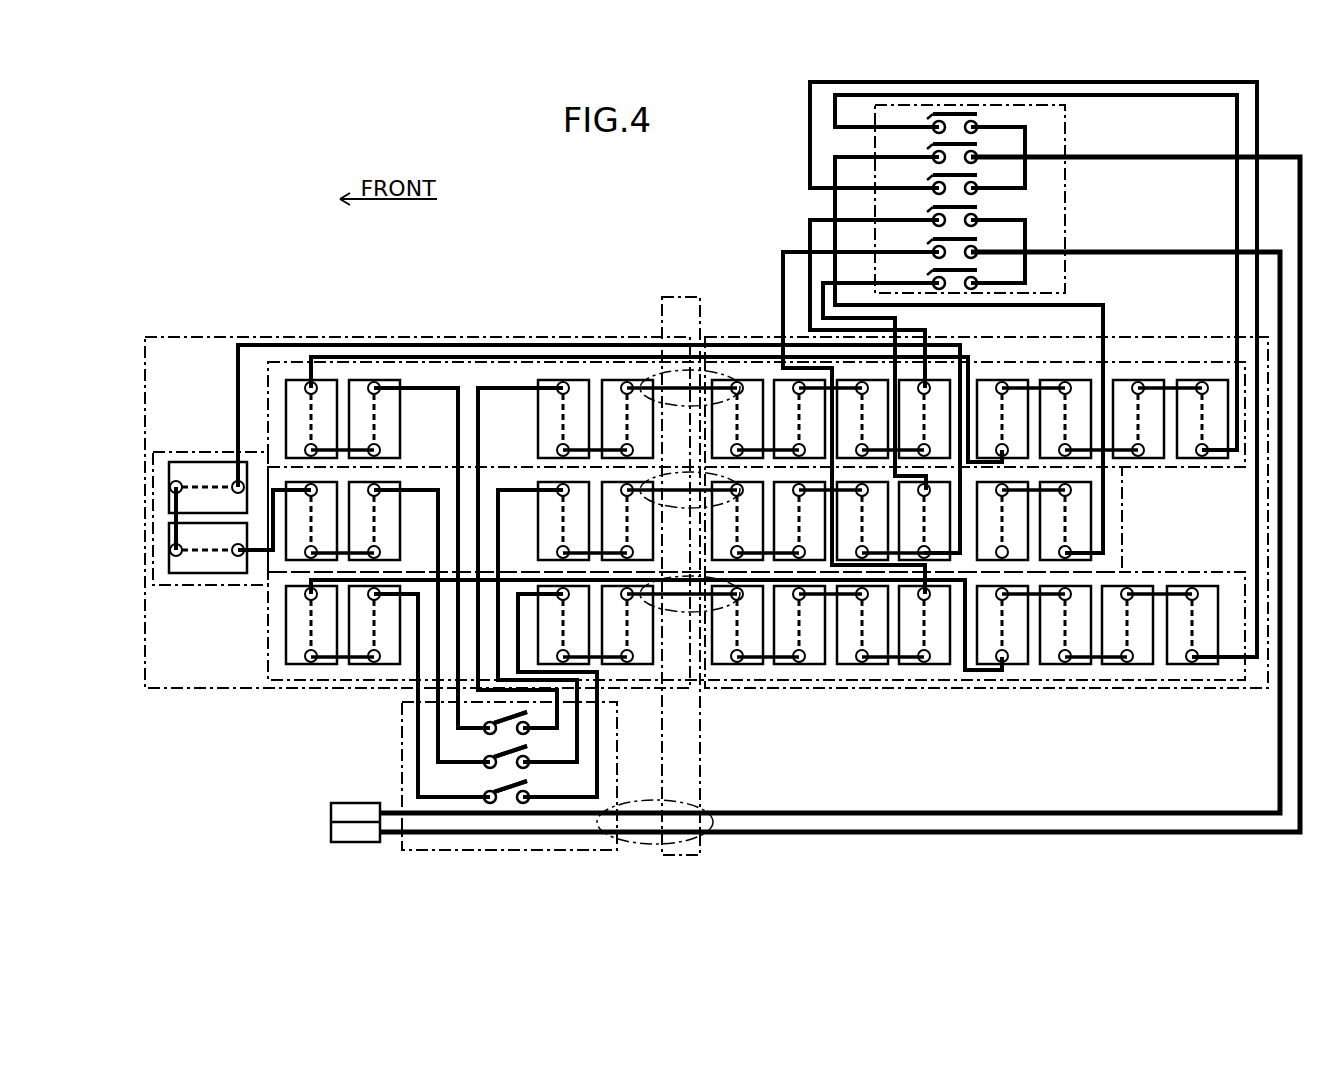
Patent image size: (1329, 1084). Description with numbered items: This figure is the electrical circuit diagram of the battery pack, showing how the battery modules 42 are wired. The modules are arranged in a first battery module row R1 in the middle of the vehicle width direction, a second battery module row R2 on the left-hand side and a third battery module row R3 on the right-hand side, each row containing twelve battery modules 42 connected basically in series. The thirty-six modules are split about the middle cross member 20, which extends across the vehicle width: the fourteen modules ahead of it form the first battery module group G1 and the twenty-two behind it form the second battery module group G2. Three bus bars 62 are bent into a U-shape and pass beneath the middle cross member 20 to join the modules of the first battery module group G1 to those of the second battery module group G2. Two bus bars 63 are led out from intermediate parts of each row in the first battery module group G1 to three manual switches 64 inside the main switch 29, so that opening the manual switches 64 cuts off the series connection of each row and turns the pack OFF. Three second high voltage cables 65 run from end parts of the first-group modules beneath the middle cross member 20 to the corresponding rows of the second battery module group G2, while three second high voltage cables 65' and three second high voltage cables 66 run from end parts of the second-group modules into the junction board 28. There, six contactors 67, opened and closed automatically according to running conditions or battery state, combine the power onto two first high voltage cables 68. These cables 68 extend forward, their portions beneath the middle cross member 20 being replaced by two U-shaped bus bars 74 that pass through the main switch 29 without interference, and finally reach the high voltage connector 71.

The middle cross member 20 is at (705, 742).
The junction board 28 is at (1065, 190).
The main switch 29 is at (402, 752).
The battery module 42 is at (782, 385).
The bus bar 62 is at (650, 383).
The bus bar 63 is at (495, 752).
The manual switch 64 is at (522, 788).
The second high voltage cable 65 is at (620, 469).
The second high voltage cable 65' is at (827, 407).
The second high voltage cable 66 is at (1103, 320).
The contactor 67 is at (928, 176).
The first high voltage cable 68 is at (400, 832).
The high voltage connector 71 is at (331, 831).
The bus bar 74 is at (705, 800).
The first battery module group G1 is at (178, 690).
The second battery module group G2 is at (1130, 690).
The first battery module row R1 is at (207, 452).
The second battery module row R2 is at (268, 680).
The third battery module row R3 is at (268, 350).